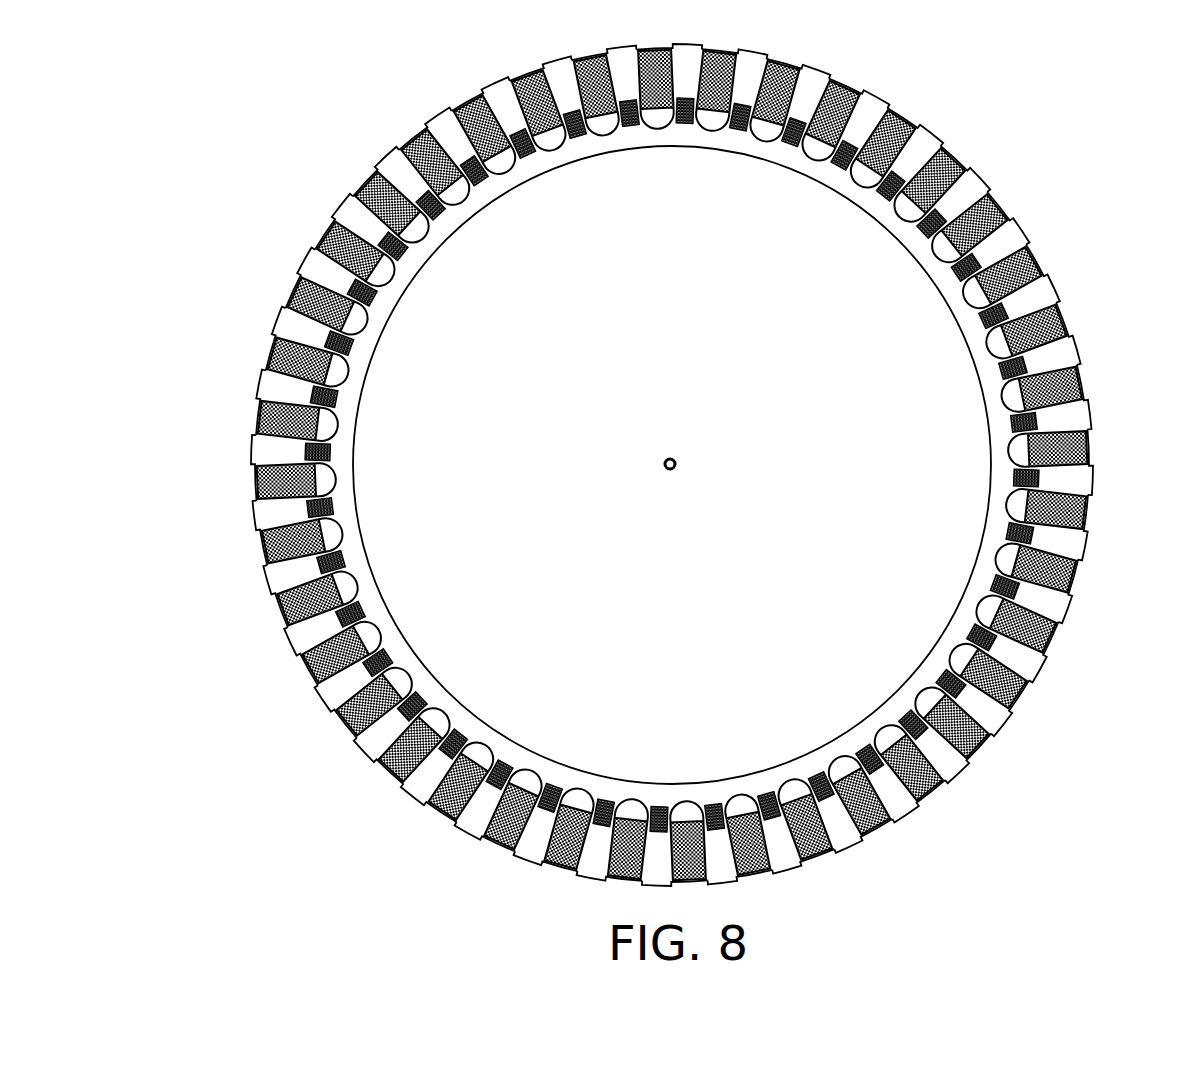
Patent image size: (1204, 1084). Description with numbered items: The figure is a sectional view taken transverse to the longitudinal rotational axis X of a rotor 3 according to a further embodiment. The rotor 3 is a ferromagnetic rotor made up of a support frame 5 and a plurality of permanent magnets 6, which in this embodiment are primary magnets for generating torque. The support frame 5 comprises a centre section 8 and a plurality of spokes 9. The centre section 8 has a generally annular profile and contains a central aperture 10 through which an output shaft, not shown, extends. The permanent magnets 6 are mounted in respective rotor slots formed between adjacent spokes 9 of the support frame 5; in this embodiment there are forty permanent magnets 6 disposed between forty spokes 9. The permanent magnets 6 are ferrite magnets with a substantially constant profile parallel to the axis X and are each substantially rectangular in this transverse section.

The rotor 3 is at (290, 723).
The support frame 5 is at (672, 465).
The permanent magnets 6 is at (717, 465).
The centre section 8 is at (672, 465).
The spokes 9 is at (699, 465).
The central aperture 10 is at (719, 447).